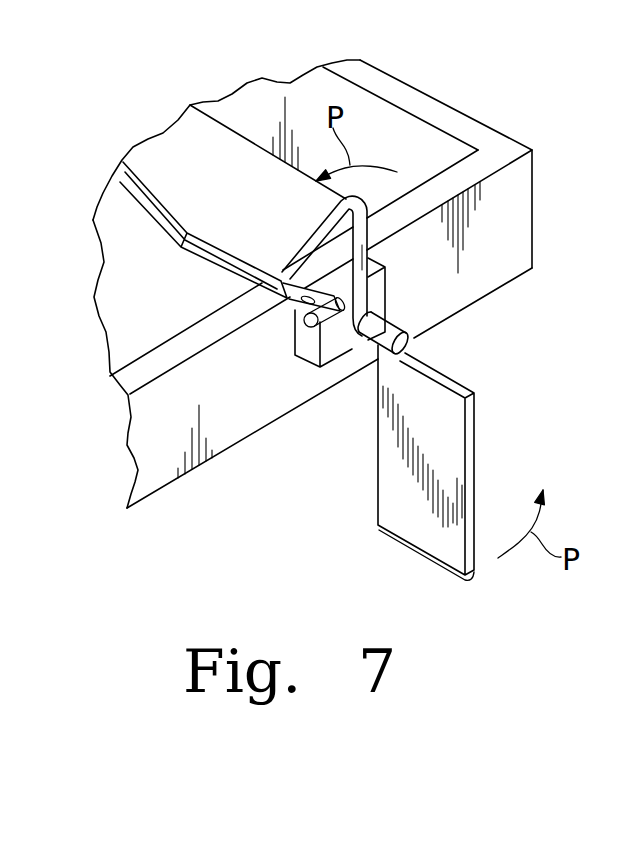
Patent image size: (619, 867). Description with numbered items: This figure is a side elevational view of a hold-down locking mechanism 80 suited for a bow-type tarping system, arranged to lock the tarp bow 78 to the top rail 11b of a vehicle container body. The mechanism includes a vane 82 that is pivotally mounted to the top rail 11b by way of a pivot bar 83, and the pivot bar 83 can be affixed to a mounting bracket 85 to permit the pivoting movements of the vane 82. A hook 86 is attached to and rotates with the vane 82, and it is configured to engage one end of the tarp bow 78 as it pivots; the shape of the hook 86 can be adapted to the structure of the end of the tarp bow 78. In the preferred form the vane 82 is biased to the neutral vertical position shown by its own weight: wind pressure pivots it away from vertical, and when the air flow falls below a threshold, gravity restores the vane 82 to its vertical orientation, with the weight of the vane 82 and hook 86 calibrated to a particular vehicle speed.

The top rail 11b is at (510, 222).
The tarp bow 78 is at (164, 208).
The locking mechanism 80 is at (380, 430).
The vane 82 is at (380, 482).
The pivot bar 83 is at (389, 328).
The mounting bracket 85 is at (378, 287).
The hook 86 is at (314, 237).